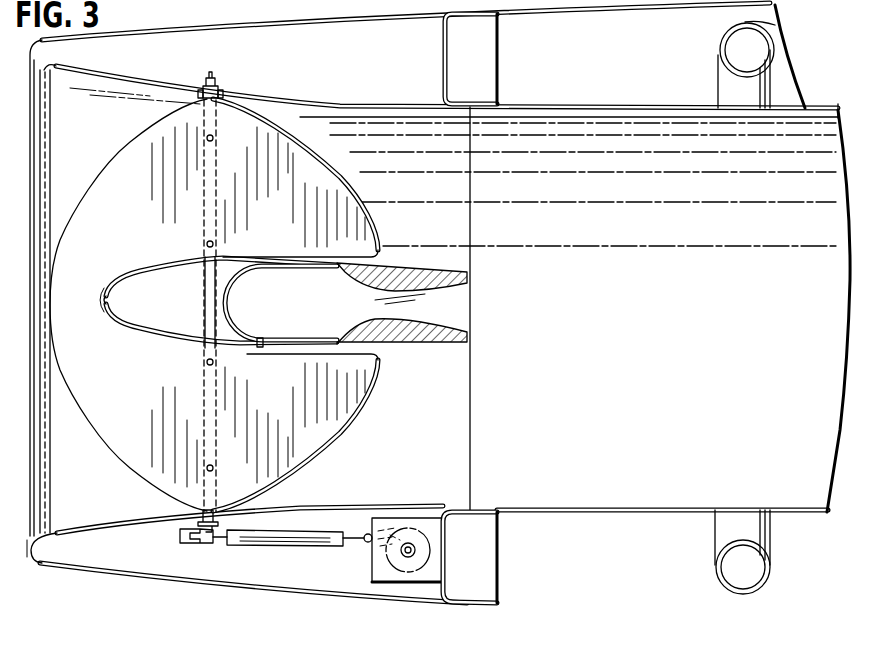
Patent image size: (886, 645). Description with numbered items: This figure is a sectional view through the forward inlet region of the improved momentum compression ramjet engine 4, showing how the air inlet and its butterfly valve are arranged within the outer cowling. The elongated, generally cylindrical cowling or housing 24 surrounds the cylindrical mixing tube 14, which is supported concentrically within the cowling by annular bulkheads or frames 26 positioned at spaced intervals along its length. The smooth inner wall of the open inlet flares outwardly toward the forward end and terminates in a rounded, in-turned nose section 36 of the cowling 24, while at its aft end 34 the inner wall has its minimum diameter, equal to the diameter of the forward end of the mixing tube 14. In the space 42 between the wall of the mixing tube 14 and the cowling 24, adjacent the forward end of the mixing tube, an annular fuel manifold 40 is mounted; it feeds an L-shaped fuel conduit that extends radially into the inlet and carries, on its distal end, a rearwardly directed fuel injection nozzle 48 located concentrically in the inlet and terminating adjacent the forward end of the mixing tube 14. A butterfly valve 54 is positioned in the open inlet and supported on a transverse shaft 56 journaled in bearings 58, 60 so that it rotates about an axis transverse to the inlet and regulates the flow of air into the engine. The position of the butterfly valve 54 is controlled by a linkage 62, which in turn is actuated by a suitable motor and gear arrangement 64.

The thrust reverser assembly 4 is at (856, 8).
The cylindrical mixing tube 14 is at (653, 107).
The cowling or housing 24 is at (790, 0).
The annular bulkheads or frames 26 is at (445, 80).
The aft end of inner wall 34 is at (472, 218).
The rounded, in-turned nose section 36 is at (30, 126).
The annular fuel manifold 40 is at (750, 58).
The space 42 is at (750, 19).
The fuel injection nozzle 48 is at (427, 347).
The butterfly valve 54 is at (103, 180).
The transverse shaft 56 is at (221, 95).
The bearing 58 is at (202, 92).
The bearing 60 is at (265, 515).
The linkage 62 is at (288, 549).
The motor and gear arrangement 64 is at (427, 518).